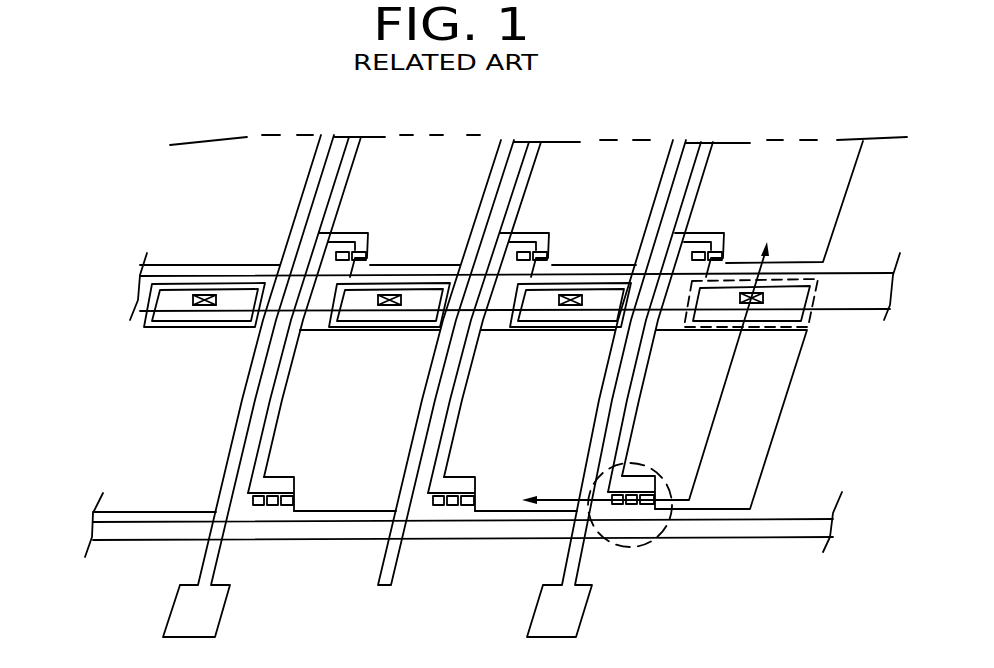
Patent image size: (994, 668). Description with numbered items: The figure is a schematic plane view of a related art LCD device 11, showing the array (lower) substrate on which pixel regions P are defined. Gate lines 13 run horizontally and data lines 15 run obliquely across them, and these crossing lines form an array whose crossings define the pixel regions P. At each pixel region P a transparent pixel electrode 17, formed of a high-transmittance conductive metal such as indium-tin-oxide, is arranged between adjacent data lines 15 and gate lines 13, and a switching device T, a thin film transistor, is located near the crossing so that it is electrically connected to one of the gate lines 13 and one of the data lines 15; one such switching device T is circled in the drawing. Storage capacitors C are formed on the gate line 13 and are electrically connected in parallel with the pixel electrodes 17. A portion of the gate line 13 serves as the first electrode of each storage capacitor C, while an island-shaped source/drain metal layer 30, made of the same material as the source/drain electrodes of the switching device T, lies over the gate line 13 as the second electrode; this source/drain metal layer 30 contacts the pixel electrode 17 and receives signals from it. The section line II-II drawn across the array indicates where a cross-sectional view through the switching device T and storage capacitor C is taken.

The LCD device 11 is at (118, 199).
The gate line 13 is at (782, 522).
The data line 15 is at (568, 568).
The pixel electrode 17 is at (478, 324).
The source/drain metal layer 30 is at (513, 325).
The storage capacitor C is at (803, 323).
The pixel region P is at (767, 415).
The switching device T is at (647, 543).
The section line II- II is at (643, 363).